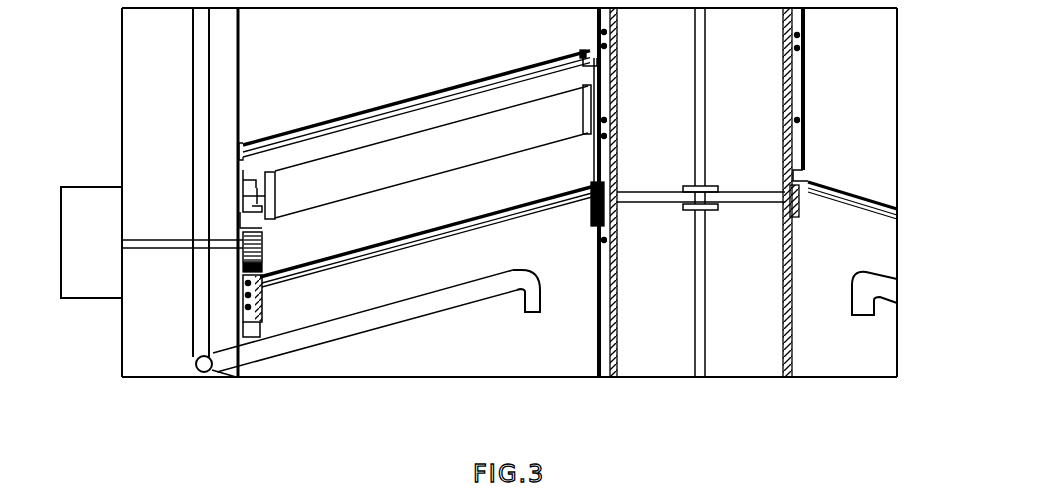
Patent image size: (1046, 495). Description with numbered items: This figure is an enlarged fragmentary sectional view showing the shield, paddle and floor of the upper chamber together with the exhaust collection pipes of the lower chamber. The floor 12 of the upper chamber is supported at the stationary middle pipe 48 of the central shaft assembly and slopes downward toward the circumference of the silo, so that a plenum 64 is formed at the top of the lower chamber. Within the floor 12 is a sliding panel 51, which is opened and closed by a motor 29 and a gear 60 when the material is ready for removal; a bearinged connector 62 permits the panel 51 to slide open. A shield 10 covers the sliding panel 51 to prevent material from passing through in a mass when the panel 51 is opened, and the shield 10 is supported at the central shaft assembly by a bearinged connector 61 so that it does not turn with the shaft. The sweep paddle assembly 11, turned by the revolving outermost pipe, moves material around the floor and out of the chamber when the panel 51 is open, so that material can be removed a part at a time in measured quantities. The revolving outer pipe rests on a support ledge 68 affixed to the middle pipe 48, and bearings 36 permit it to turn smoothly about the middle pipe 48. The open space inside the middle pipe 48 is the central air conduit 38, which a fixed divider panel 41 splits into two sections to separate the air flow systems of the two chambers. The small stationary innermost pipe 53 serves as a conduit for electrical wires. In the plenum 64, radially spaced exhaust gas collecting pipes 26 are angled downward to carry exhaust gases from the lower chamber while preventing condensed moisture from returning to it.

The shield 10 is at (430, 96).
The sweep paddle assembly 11 is at (370, 185).
The floor 12 is at (834, 180).
The exhaust gas collecting pipes 26 is at (438, 294).
The motor 29 is at (103, 232).
The bearings 36 is at (612, 50).
The central air conduit 38 is at (671, 150).
The fixed divider panel 41 is at (637, 200).
The middle pipe 48 is at (614, 284).
The sliding panel 51 is at (420, 228).
The innermost pipe 53 is at (709, 335).
The gear 60 is at (264, 239).
The bearinged connector 61 is at (594, 48).
The bearinged connector 62 is at (595, 195).
The plenum 64 is at (581, 297).
The support ledge 68 is at (810, 160).